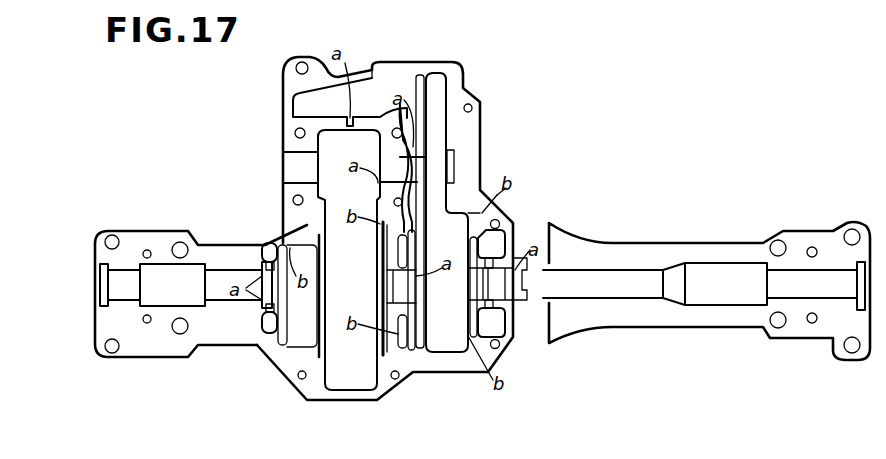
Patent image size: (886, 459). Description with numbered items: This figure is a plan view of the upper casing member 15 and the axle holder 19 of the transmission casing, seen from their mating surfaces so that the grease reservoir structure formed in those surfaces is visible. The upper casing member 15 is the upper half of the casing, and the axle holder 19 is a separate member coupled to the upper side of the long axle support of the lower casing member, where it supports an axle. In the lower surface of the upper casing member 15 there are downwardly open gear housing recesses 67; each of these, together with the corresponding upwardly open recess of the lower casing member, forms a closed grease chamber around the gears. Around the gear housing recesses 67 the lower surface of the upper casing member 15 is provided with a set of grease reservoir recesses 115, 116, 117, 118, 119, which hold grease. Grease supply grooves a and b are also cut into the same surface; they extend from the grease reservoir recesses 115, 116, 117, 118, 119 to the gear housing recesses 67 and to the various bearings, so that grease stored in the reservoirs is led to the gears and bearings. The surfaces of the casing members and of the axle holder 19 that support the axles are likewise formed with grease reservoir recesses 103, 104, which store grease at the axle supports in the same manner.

The upper casing member 15 is at (437, 63).
The grease reservoir recess 115 is at (373, 92).
The grease reservoir recess 116 is at (410, 222).
The grease reservoir recess 117 is at (384, 292).
The grease reservoir recess 118 is at (495, 245).
The grease reservoir recess 119 is at (267, 244).
The gear housing recess 67 is at (443, 333).
The grease reservoir recess 103 is at (173, 278).
The grease reservoir recess 104 is at (723, 290).
The axle holder 19 is at (712, 254).